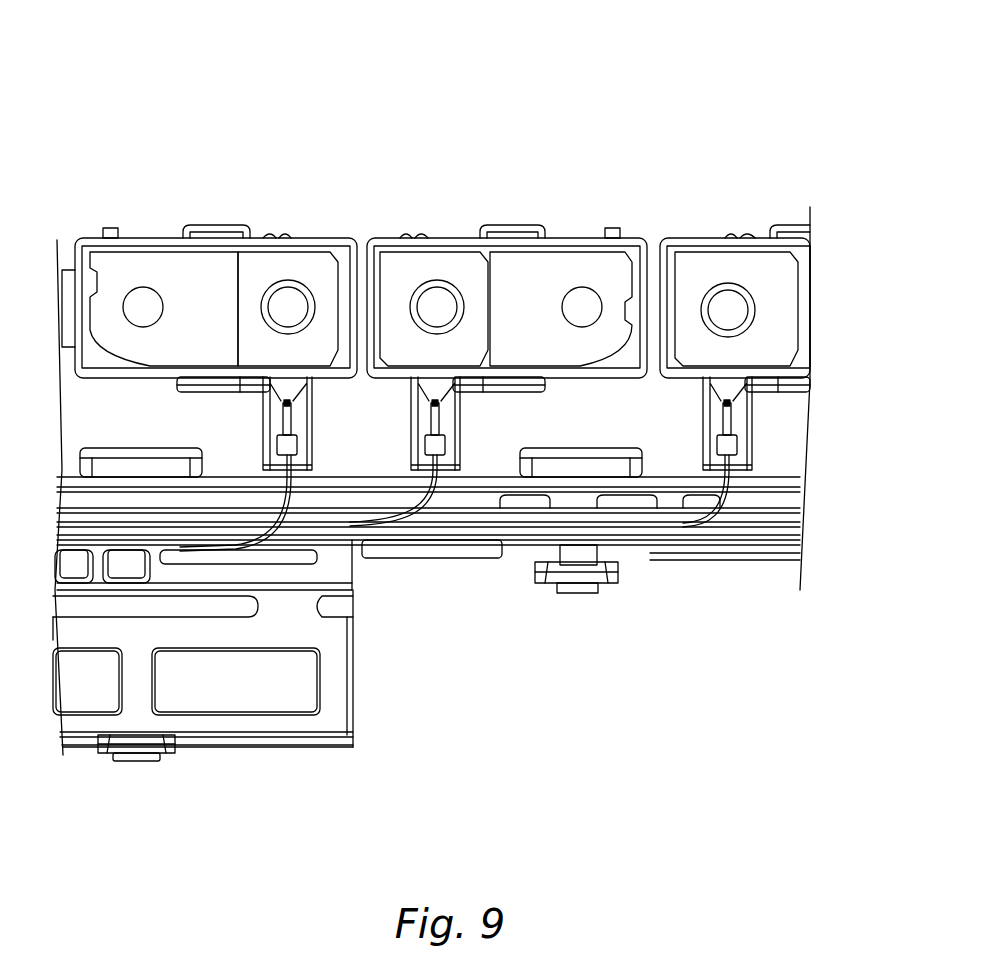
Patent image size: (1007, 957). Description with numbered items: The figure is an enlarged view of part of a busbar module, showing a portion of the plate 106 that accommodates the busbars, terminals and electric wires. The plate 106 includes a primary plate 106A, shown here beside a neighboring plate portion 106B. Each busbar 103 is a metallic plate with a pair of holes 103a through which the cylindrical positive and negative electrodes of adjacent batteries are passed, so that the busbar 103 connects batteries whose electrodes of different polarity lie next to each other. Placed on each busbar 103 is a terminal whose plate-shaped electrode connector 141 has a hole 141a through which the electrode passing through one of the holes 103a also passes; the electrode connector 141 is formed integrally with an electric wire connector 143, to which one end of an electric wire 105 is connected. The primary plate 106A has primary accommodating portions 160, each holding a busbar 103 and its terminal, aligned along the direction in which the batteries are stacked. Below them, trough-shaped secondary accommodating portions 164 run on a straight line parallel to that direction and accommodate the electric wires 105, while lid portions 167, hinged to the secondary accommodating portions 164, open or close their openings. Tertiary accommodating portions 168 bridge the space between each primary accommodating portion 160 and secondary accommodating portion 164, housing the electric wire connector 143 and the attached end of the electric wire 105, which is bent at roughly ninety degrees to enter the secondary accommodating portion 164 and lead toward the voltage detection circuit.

The busbar 103 is at (170, 240).
The hole 103a is at (130, 296).
The electric wire 105 is at (717, 530).
The plate 106 is at (612, 100).
The primary plate 106A is at (466, 128).
The second battery module 106B is at (263, 128).
The electrode connector 141 is at (222, 262).
The hole 141a is at (294, 282).
The electric wire connector 143 is at (433, 409).
The primary accommodating portion 160 is at (335, 235).
The secondary accommodating portion 164 is at (355, 570).
The lid portion 167 is at (303, 722).
The tertiary accommodating portion 168 is at (405, 450).